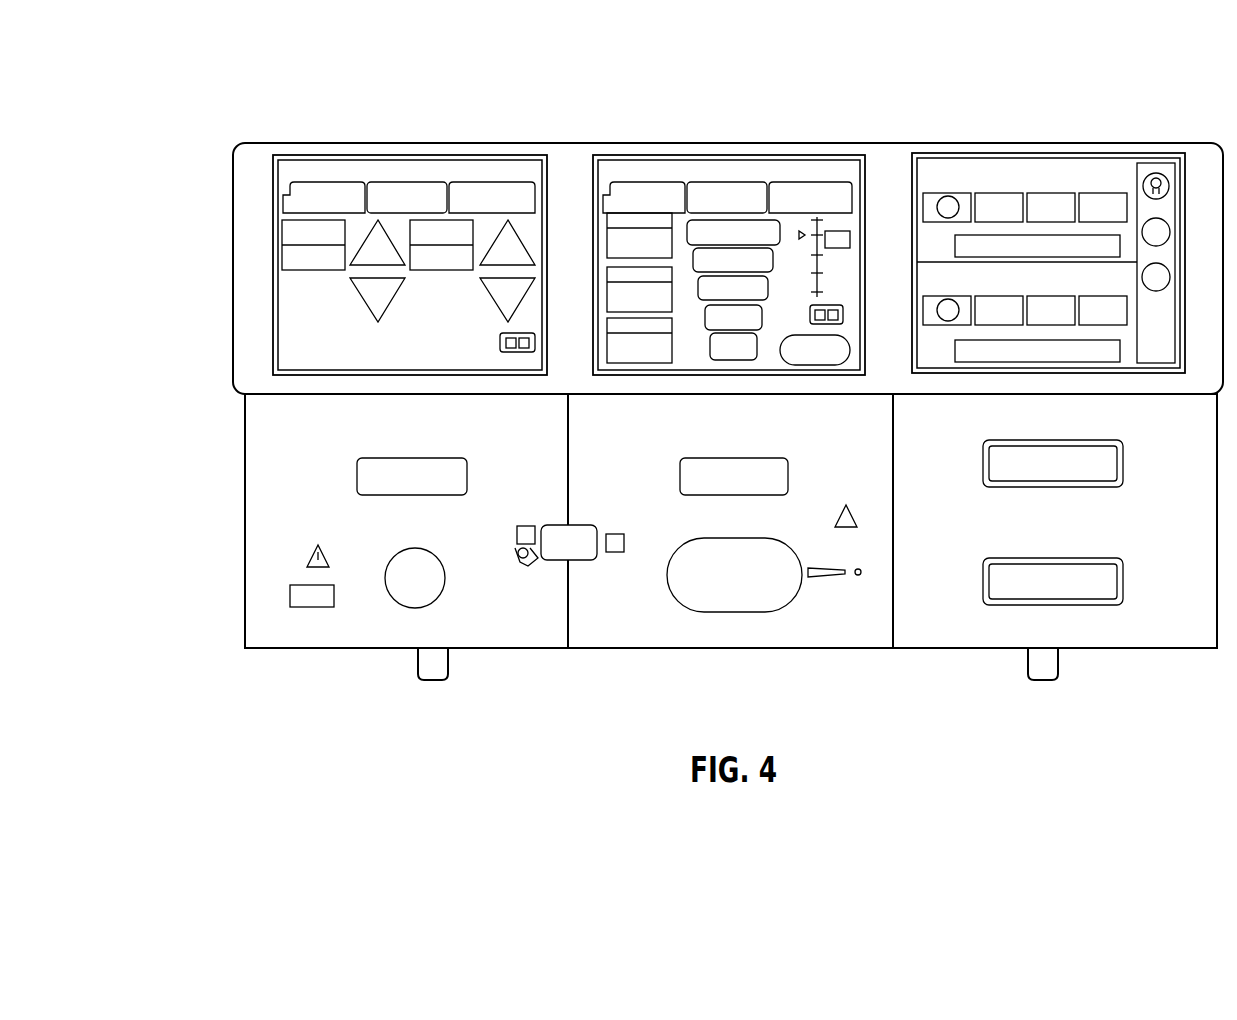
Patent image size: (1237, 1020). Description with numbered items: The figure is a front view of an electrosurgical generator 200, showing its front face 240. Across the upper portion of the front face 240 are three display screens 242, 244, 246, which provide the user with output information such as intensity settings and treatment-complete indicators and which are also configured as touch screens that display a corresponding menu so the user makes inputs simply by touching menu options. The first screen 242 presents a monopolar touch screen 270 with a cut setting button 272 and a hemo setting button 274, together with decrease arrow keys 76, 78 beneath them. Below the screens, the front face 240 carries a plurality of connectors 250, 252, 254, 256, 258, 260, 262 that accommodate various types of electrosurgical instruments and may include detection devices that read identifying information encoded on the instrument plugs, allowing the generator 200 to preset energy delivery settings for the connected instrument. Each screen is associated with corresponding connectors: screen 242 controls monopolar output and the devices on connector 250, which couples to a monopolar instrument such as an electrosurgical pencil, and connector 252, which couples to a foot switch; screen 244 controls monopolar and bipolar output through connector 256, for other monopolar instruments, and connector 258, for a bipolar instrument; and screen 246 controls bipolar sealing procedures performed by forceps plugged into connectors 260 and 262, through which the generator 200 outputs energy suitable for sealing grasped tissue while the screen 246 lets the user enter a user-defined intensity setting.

The electrosurgical generator 200 is at (1092, 92).
The front face 240 is at (598, 157).
The display screen 242 is at (357, 241).
The display screen 244 is at (732, 155).
The display screen 246 is at (993, 153).
The touch screen 270 is at (272, 235).
The cut mode setting button 272 is at (297, 220).
The hemo mode setting button 274 is at (421, 220).
The cut decrease arrow key 76 is at (355, 293).
The hemo decrease arrow key 78 is at (485, 293).
The connector 250 is at (357, 478).
The connector 252 is at (390, 558).
The connector 254 is at (562, 525).
The connector 256 is at (705, 457).
The connector 258 is at (680, 545).
The connector 260 is at (1005, 440).
The connector 262 is at (1005, 555).